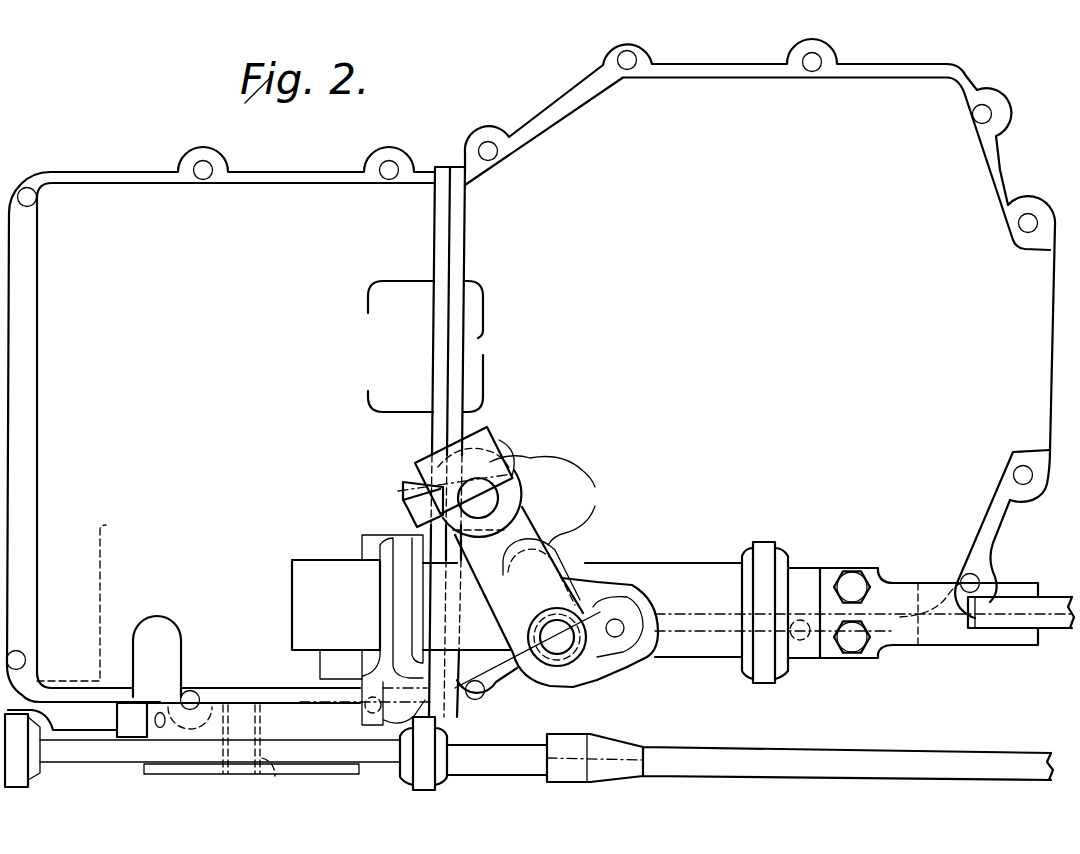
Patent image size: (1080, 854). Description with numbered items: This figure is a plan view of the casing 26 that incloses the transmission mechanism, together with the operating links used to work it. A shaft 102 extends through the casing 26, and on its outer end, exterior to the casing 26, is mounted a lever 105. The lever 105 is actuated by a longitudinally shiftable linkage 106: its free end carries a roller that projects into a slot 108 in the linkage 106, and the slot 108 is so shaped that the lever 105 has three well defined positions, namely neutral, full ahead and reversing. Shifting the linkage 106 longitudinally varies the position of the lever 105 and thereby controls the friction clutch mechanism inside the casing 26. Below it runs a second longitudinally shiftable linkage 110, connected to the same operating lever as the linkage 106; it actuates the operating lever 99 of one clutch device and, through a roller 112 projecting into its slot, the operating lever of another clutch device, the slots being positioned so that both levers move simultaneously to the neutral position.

The casing 26 is at (756, 369).
The operating lever 99 is at (235, 723).
The shaft 102 is at (484, 494).
The lever 105 is at (530, 573).
The linkage 106 is at (693, 590).
The slot 108 is at (590, 657).
The linkage 110 is at (499, 756).
The roller 112 is at (270, 770).